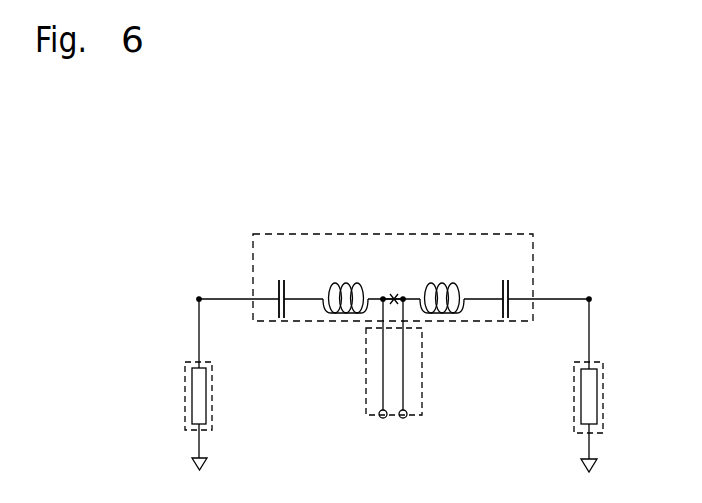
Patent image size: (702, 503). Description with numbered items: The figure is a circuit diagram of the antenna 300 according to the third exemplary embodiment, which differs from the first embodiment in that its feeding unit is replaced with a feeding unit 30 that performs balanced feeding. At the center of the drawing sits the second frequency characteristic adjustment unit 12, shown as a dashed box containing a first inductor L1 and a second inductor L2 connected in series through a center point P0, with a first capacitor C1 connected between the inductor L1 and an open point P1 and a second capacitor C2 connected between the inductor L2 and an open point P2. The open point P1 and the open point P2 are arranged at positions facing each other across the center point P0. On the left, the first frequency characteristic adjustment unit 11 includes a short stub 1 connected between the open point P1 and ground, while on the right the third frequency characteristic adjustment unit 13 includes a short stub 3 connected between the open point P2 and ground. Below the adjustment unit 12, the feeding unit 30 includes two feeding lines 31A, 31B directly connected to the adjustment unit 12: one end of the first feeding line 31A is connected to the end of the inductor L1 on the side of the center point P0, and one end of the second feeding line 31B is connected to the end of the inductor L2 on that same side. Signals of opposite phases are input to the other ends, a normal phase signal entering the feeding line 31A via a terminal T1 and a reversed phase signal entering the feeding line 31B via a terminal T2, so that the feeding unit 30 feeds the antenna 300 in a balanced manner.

The antenna 300 is at (393, 118).
The second frequency characteristic adjustment unit 12 is at (477, 233).
The first capacitor C1 is at (282, 284).
The second capacitor C2 is at (505, 284).
The first inductor L1 is at (345, 281).
The second inductor L2 is at (442, 281).
The center point P0 is at (394, 296).
The open point P1 is at (199, 295).
The open point P2 is at (589, 295).
The short stub 1 is at (190, 372).
The first frequency characteristic adjustment unit 11 is at (185, 418).
The short stub 3 is at (603, 375).
The third frequency characteristic adjustment unit 13 is at (603, 420).
The feeding unit 30 is at (366, 398).
The first feeding line 31A is at (377, 359).
The second feeding line 31B is at (409, 359).
The terminal T1 is at (380, 420).
The terminal T2 is at (406, 420).